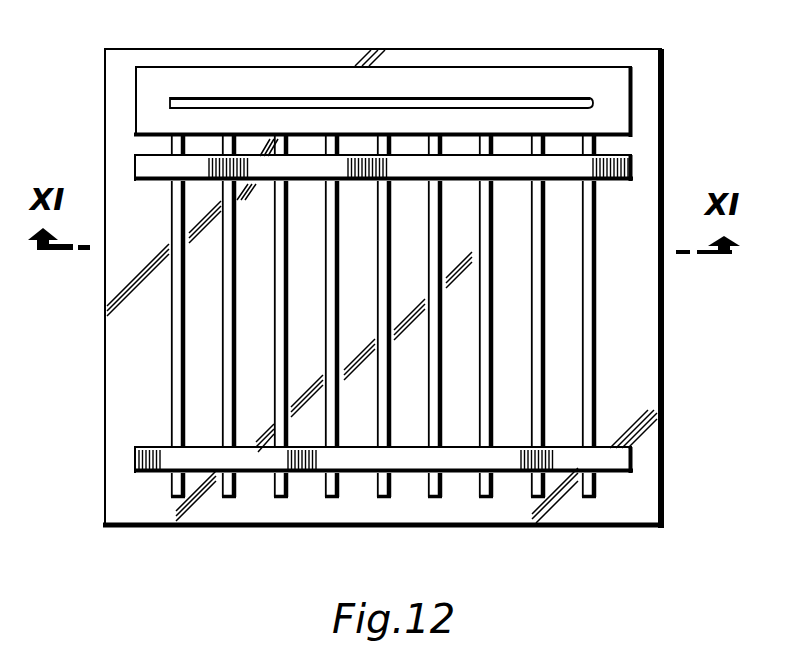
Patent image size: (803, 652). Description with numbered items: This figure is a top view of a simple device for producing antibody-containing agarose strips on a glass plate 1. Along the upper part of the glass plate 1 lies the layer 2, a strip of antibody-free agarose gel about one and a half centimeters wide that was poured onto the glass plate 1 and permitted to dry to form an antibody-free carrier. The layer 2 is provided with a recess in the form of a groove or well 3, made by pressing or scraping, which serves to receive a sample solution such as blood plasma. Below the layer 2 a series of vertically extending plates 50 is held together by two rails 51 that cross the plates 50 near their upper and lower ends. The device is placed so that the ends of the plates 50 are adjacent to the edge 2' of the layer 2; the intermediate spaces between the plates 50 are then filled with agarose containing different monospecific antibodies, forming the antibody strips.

The glass plate 1 is at (572, 60).
The layer 2 is at (384, 73).
The edge 2' is at (422, 142).
The well 3 is at (520, 106).
The plates 50 is at (330, 302).
The rails 51 is at (137, 167).